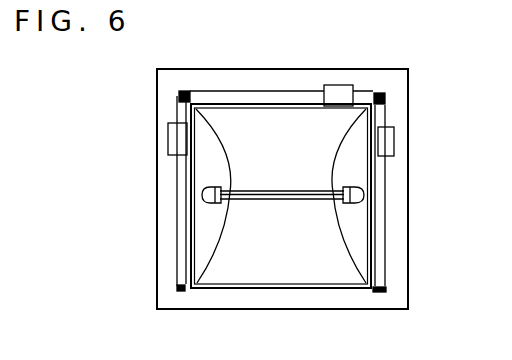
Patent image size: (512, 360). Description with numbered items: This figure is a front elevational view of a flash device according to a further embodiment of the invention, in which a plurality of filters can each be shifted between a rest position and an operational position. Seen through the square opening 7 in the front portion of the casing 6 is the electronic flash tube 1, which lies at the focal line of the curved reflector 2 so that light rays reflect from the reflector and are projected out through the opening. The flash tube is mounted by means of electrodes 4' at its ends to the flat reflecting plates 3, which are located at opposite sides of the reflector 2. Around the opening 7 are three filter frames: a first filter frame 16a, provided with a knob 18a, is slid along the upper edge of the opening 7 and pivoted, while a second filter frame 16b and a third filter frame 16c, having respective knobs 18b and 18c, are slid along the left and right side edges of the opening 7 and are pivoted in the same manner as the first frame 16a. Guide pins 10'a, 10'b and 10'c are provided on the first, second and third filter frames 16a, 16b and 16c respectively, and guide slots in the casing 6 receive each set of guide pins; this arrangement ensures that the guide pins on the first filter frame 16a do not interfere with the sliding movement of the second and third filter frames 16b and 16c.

The electronic flash tube 1 is at (282, 199).
The curved reflector 2 is at (316, 272).
The flat reflecting plates 3 is at (204, 272).
The electrodes 4' is at (283, 210).
The casing 6 is at (318, 78).
The square opening 7 is at (176, 204).
The guide pins 10'a is at (278, 101).
The guide pins 10'b is at (155, 165).
The guide pins 10'c is at (416, 197).
The first filter frame 16a is at (279, 96).
The second filter frame 16b is at (181, 161).
The third filter frame 16c is at (382, 184).
The knob 18a is at (340, 95).
The knob 18b is at (176, 133).
The knob 18c is at (388, 142).